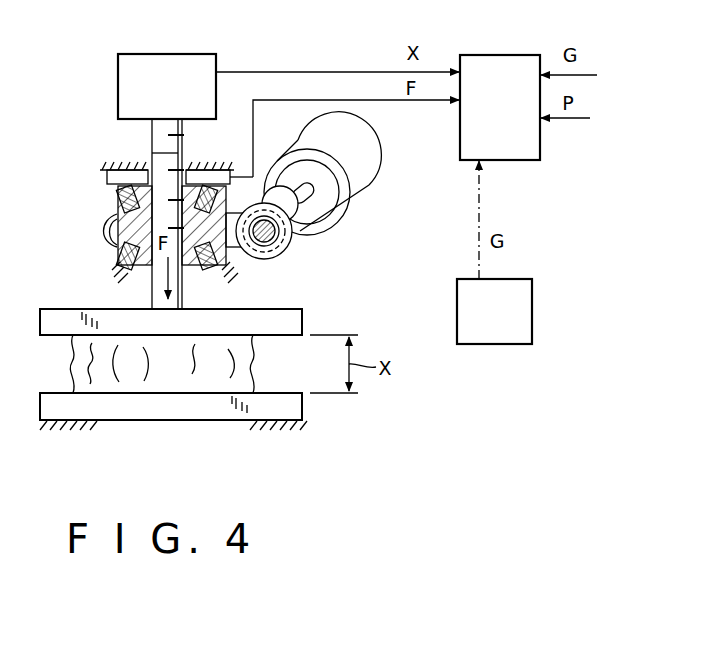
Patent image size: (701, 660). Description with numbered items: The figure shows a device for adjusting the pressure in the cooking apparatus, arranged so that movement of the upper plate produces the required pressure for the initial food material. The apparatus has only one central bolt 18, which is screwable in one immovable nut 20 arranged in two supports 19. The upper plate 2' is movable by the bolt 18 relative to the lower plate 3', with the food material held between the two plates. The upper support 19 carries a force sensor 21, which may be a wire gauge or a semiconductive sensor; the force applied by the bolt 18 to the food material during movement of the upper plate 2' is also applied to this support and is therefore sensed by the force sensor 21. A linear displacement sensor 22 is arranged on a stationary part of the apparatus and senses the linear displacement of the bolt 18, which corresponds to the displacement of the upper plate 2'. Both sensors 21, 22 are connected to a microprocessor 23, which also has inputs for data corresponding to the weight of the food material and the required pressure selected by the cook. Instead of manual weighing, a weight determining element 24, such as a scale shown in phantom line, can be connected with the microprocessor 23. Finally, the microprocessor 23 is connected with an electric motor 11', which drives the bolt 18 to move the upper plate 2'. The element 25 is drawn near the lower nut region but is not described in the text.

The linear displacement sensor 22 is at (192, 62).
The microprocessor 23 is at (503, 152).
The weight determining element 24 is at (494, 335).
The central bolt 18 is at (178, 292).
The force sensor 21 is at (106, 173).
The supports 19 is at (118, 192).
The immovable nut 20 is at (112, 253).
The seal 25 is at (122, 278).
The electric motor 11' is at (331, 185).
The upper plate 2' is at (182, 307).
The lower plate 3' is at (189, 426).